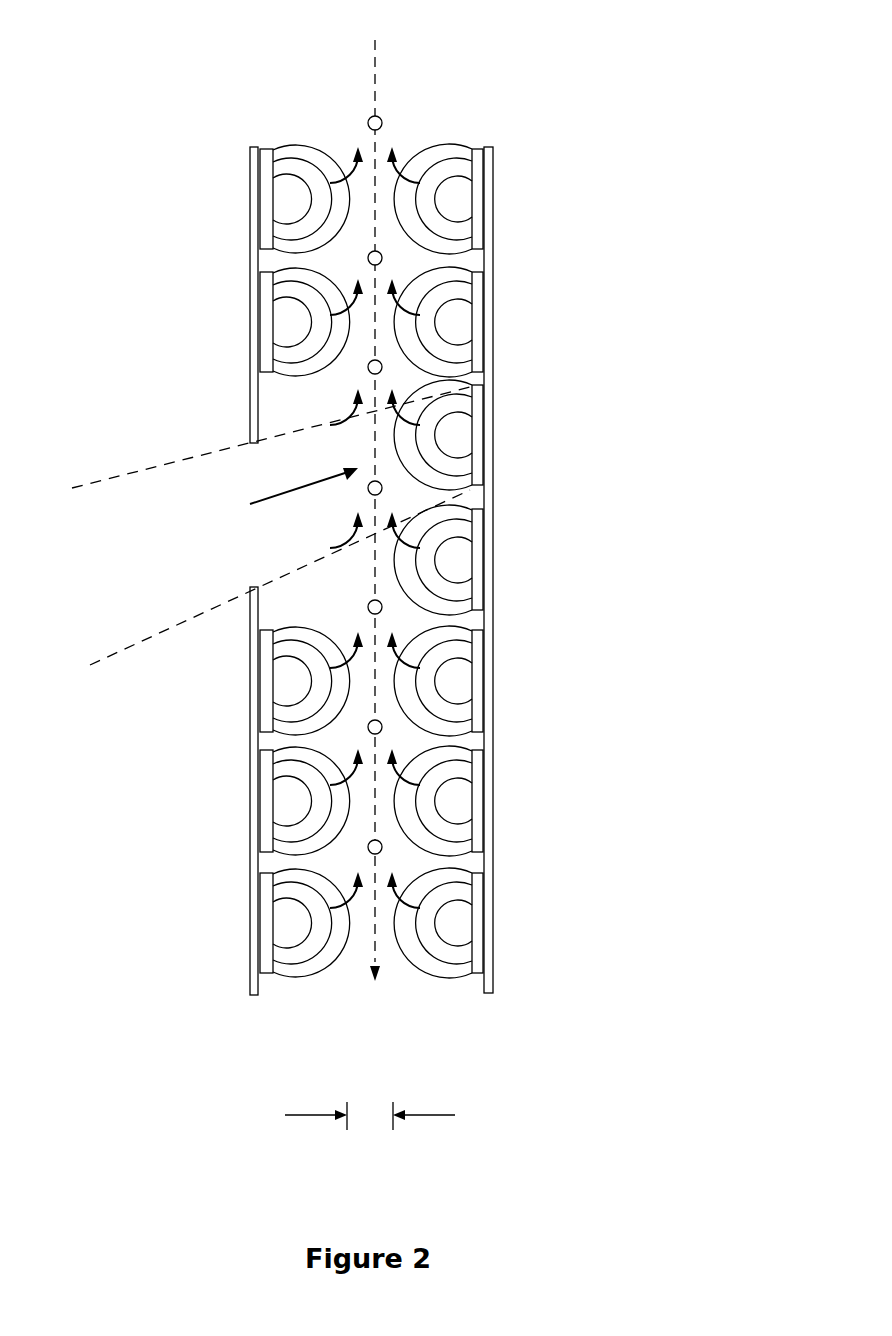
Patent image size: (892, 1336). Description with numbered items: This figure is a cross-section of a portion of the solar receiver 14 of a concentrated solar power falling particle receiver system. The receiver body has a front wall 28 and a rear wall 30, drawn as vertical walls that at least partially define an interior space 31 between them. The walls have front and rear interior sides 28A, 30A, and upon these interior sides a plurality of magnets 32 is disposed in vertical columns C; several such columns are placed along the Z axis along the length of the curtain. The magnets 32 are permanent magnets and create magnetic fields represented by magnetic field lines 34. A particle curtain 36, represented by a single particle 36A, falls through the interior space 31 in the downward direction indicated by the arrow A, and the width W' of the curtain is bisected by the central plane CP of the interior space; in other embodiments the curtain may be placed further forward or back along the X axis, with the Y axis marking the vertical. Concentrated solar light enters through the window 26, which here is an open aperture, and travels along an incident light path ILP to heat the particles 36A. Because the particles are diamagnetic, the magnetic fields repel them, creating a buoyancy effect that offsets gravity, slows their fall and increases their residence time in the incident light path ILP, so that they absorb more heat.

The solar receiver 14 is at (150, 62).
The window 26 is at (247, 475).
The front wall 28 is at (252, 287).
The front interior side 28A is at (258, 987).
The rear wall 30 is at (497, 350).
The rear interior side 30A is at (485, 987).
The interior space 31 is at (400, 597).
The magnets 32 is at (462, 193).
The magnetic field lines 34 is at (460, 307).
The particle curtain 36 is at (375, 28).
The particle 36A is at (368, 121).
The arrow A is at (378, 950).
The vertical columns C is at (492, 128).
The central plane CP is at (378, 80).
The incident light path ILP is at (283, 497).
The width of the curtain W' is at (370, 1139).
The X axis X is at (613, 912).
The Y axis Y is at (613, 912).
The Z axis Z is at (613, 913).